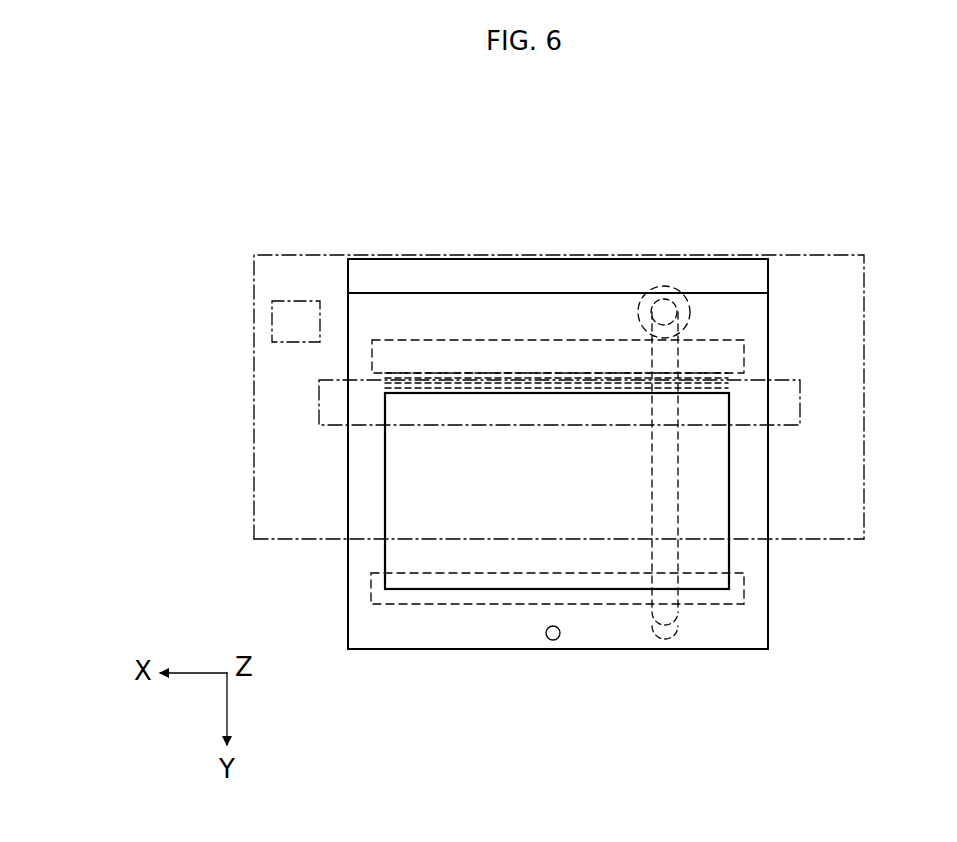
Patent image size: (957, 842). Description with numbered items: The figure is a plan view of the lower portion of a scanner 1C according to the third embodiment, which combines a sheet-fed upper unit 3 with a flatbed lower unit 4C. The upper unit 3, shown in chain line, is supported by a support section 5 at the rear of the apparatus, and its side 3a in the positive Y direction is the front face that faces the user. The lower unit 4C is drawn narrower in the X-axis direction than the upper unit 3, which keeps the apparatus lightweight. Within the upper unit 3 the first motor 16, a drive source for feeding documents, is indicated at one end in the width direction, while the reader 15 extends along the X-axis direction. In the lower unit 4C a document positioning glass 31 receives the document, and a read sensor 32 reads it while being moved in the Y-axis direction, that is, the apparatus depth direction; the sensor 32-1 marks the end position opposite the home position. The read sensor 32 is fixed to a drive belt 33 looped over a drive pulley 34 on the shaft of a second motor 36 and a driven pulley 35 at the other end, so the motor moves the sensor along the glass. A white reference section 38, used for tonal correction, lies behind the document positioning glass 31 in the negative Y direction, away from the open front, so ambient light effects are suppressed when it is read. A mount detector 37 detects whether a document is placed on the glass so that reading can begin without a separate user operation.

The scanner 1C is at (540, 192).
The upper unit 3 is at (300, 254).
The side 3a is at (314, 545).
The lower unit 4C is at (380, 258).
The support section 5 is at (748, 272).
The reader 15 is at (800, 421).
The first motor 16 is at (272, 318).
The document positioning glass 31 is at (437, 558).
The read sensor 32 is at (745, 353).
The sensor 32-1 is at (745, 595).
The drive belt 33 is at (680, 465).
The drive pulley 34 is at (640, 298).
The driven pulley 35 is at (681, 641).
The second motor 36 is at (677, 298).
The mount detector 37 is at (556, 641).
The white reference section 38 is at (730, 398).